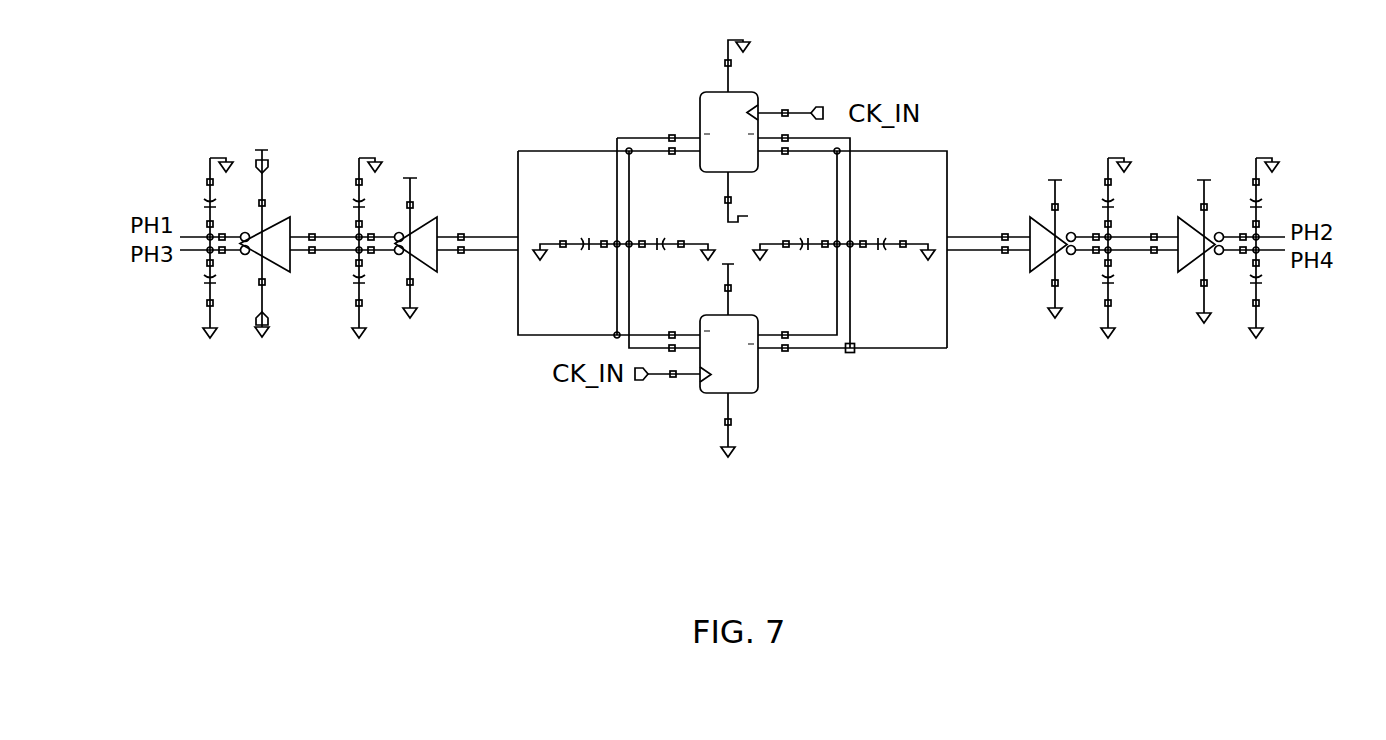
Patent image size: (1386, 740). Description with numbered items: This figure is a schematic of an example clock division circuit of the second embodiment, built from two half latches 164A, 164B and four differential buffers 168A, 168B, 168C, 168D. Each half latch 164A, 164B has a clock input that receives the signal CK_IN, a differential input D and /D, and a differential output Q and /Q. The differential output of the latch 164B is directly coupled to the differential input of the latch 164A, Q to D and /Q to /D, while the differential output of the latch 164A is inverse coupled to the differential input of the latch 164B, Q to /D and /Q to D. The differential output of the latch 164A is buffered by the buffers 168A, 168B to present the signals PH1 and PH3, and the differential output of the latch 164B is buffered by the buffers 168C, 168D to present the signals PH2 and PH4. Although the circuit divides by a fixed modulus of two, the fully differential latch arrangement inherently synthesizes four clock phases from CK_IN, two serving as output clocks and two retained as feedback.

The half latch 164A is at (702, 105).
The half latch 164B is at (760, 378).
The differential buffer 168A is at (285, 216).
The differential buffer 168B is at (428, 216).
The differential buffer 168C is at (1038, 218).
The differential buffer 168D is at (1187, 218).